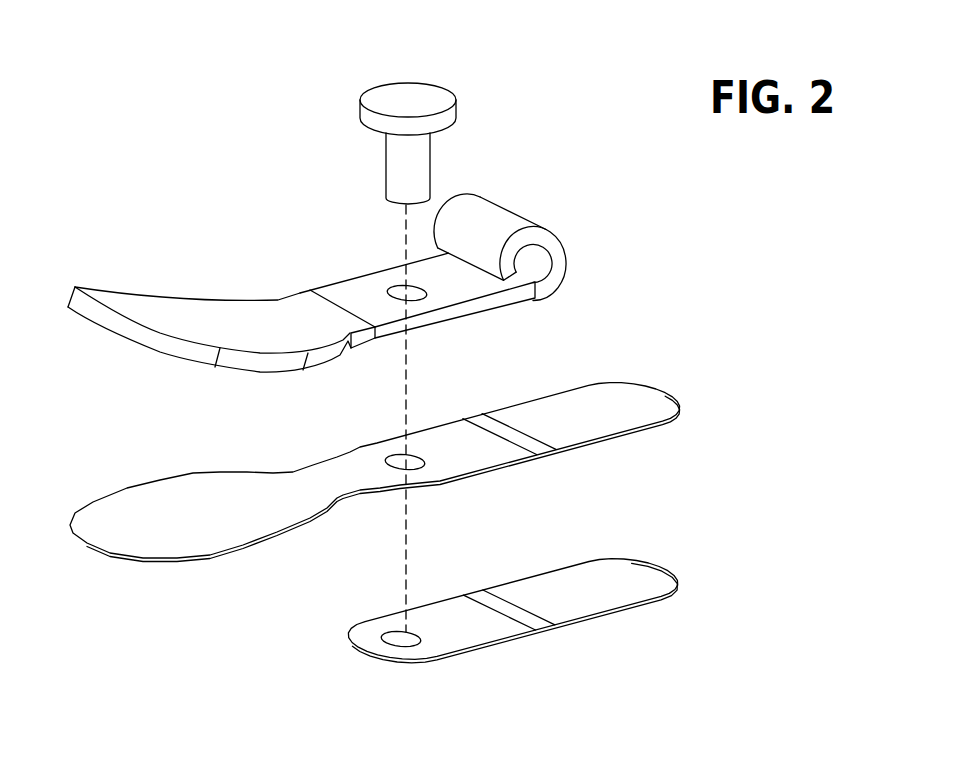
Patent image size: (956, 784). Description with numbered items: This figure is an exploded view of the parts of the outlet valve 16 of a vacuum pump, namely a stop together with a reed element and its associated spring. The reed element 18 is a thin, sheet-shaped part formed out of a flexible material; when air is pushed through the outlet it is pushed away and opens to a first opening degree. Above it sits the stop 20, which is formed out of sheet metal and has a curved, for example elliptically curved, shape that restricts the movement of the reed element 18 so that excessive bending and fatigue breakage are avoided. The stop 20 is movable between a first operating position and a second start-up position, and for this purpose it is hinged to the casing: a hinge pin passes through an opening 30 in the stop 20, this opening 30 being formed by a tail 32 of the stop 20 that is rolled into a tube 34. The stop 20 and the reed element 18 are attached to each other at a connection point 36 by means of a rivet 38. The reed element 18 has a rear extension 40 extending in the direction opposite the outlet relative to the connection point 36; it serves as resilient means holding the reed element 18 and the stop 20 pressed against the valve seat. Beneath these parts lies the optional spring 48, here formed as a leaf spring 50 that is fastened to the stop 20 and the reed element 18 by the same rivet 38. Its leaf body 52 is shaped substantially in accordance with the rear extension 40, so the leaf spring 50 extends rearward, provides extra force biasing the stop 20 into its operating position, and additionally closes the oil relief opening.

The outlet valve 16 is at (171, 146).
The reed element 18 is at (178, 540).
The stop 20 is at (208, 313).
The opening 30 is at (538, 272).
The tail 32 is at (541, 298).
The tube 34 is at (553, 242).
The connection point 36 is at (354, 264).
The rivet 38 is at (438, 90).
The rear extension 40 is at (617, 417).
The spring 48 is at (623, 596).
The leaf spring 50 is at (559, 614).
The leaf body 52 is at (649, 574).